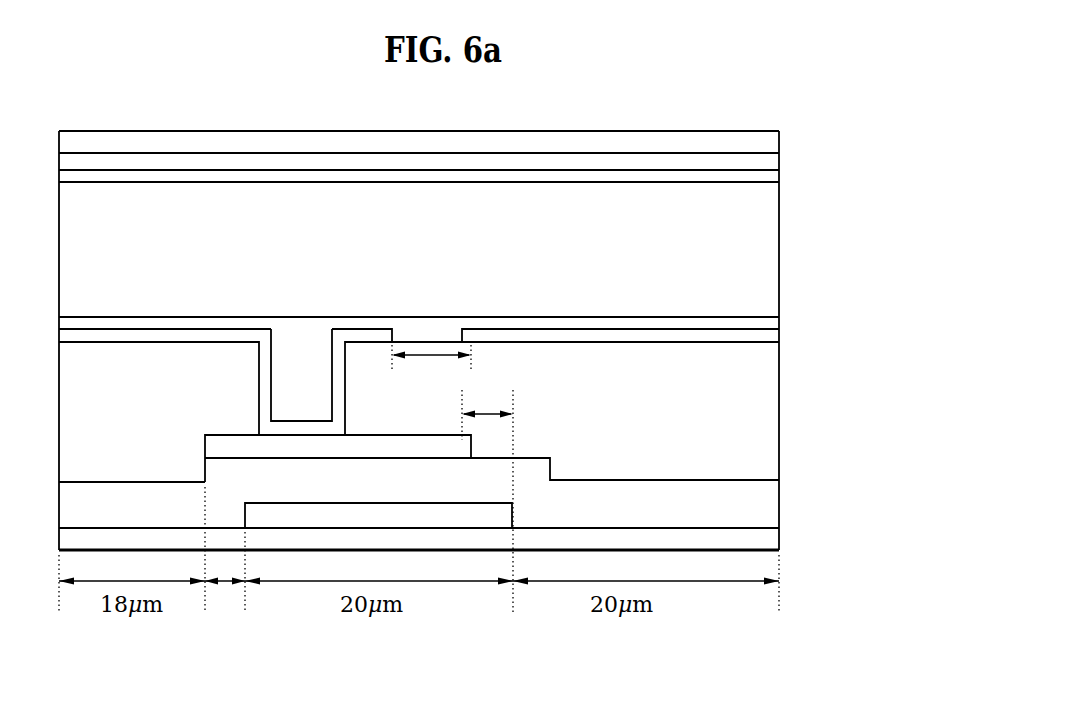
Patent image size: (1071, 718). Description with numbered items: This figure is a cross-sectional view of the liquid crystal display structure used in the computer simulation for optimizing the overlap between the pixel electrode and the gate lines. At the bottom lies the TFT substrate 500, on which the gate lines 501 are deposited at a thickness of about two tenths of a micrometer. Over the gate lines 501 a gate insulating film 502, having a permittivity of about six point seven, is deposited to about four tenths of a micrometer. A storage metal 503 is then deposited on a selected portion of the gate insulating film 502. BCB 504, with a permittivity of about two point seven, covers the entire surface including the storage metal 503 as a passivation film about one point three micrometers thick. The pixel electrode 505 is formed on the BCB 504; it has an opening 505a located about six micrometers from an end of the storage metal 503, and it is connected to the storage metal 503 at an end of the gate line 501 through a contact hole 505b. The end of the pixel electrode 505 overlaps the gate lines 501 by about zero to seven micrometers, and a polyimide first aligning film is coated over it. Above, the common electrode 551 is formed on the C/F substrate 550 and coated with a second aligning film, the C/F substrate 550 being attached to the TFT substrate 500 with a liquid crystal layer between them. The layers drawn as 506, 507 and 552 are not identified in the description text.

The TFT substrate 500 is at (770, 540).
The gate line 501 is at (445, 517).
The gate insulating film 502 is at (770, 505).
The storage metal 503 is at (320, 447).
The BCB 504 is at (770, 425).
The pixel electrode 505 is at (775, 337).
The opening of the pixel electrode 505a is at (434, 328).
The contact hole 505b is at (297, 392).
The ohmic contact layer 506 is at (770, 322).
The passivation layer 507 is at (772, 255).
The C/F substrate 550 is at (772, 141).
The common electrode 551 is at (772, 160).
The color filter 552 is at (772, 181).